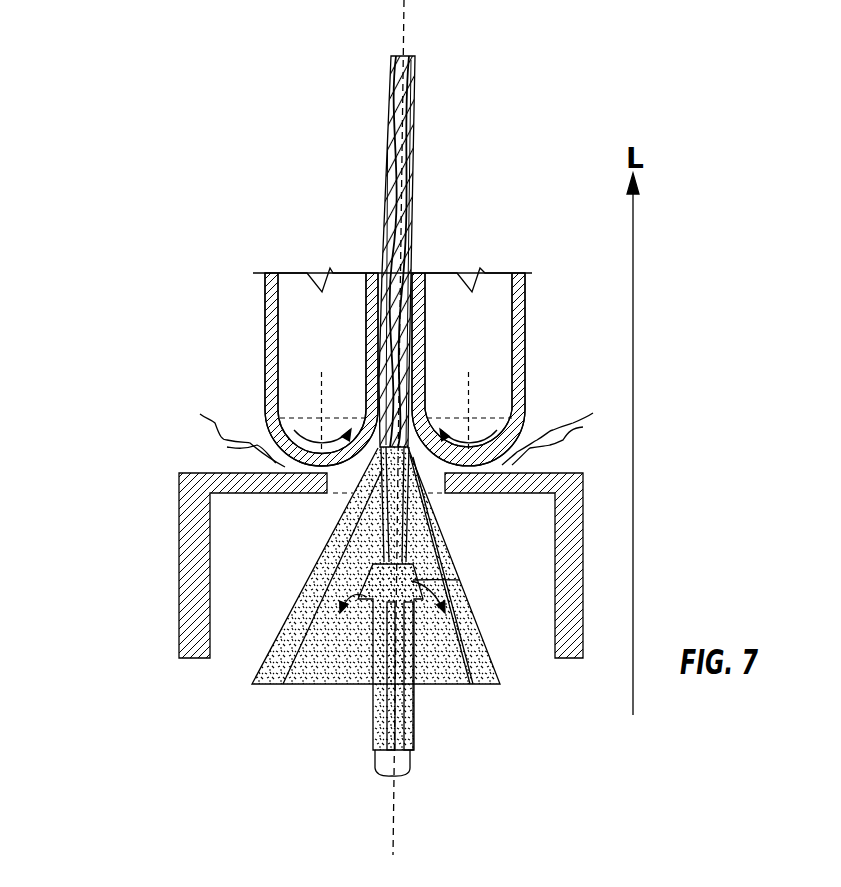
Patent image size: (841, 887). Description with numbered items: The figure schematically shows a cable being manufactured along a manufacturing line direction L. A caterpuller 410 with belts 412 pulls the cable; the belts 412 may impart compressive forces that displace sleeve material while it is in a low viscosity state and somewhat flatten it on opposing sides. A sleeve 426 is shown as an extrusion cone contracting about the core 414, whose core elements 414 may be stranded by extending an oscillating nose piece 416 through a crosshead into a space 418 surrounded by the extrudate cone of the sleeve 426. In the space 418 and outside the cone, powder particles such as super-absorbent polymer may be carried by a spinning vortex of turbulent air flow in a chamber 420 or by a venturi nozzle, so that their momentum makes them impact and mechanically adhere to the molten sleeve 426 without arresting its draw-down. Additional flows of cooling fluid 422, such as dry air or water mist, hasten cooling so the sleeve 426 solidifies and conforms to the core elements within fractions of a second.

The caterpuller 410 is at (290, 357).
The belts 412 is at (523, 310).
The core 414 is at (400, 60).
The oscillating nose piece 416 is at (460, 580).
The space 418 is at (323, 647).
The chamber 420 is at (187, 547).
The cooling fluid 422 is at (227, 447).
The sleeve 426 is at (483, 631).